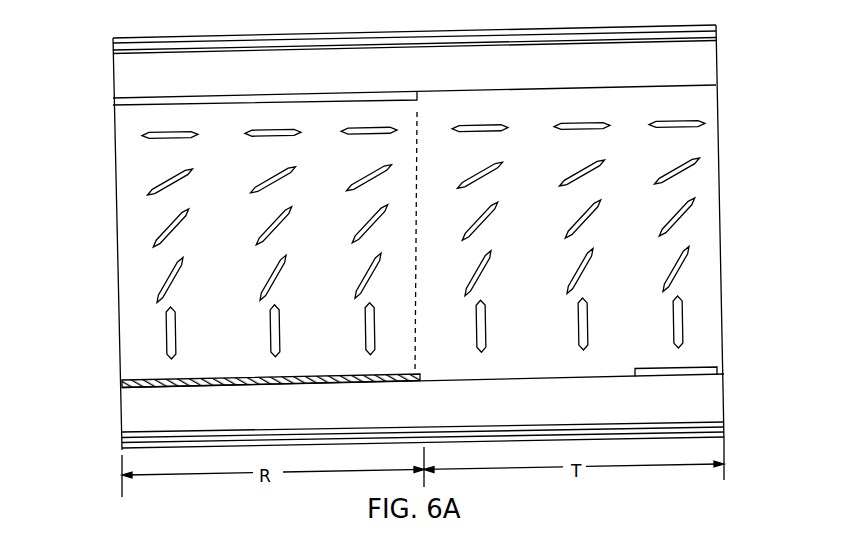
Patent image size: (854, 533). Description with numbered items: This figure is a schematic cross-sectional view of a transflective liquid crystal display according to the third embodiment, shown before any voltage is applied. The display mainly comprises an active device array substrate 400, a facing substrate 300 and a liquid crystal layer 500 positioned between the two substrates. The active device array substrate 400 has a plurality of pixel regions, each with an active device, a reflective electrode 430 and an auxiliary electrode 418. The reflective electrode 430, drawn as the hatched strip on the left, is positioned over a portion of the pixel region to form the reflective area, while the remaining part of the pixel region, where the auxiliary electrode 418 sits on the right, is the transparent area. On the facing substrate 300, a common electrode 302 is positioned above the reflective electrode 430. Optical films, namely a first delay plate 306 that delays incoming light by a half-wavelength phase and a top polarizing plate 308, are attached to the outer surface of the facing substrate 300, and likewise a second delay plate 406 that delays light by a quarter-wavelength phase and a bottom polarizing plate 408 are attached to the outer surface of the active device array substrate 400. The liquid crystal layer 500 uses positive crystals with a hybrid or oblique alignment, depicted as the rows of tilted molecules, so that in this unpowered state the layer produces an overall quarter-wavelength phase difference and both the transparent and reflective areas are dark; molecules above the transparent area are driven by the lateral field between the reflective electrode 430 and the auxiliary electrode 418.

The facing substrate 300 is at (688, 60).
The common electrode 302 is at (113, 104).
The first delay plate 306 is at (113, 55).
The top polarizing plate 308 is at (120, 40).
The active device array substrate 400 is at (698, 393).
The second delay plate 406 is at (122, 437).
The bottom polarizing plate 408 is at (120, 447).
The auxiliary electrode 418 is at (716, 368).
The reflective electrode 430 is at (147, 380).
The liquid crystal layer 500 is at (693, 198).